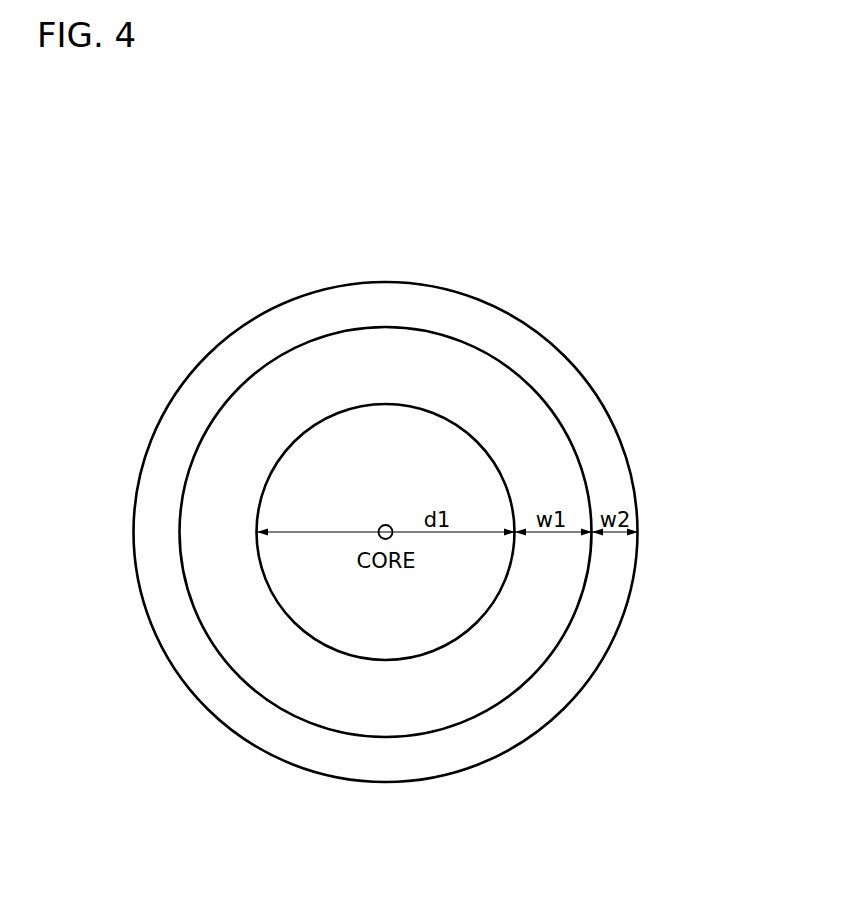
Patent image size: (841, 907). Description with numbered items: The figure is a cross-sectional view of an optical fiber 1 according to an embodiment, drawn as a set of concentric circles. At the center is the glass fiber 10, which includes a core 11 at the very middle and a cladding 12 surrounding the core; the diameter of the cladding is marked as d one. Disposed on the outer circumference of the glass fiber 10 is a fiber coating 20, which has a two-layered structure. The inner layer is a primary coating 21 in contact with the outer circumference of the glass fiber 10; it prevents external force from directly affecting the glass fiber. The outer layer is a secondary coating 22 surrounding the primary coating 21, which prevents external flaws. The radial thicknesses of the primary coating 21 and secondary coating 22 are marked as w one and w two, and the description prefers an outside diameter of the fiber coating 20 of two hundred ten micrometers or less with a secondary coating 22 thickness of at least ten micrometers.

The optical fiber 1 is at (528, 240).
The glass fiber 10 is at (530, 276).
The core 11 is at (386, 525).
The cladding 12 is at (485, 470).
The fiber coating 20 is at (697, 380).
The primary coating 21 is at (550, 435).
The secondary coating 22 is at (612, 443).